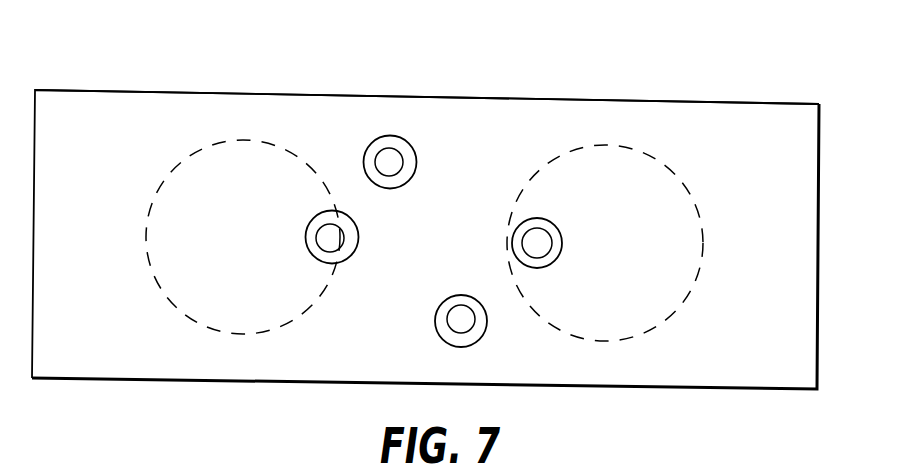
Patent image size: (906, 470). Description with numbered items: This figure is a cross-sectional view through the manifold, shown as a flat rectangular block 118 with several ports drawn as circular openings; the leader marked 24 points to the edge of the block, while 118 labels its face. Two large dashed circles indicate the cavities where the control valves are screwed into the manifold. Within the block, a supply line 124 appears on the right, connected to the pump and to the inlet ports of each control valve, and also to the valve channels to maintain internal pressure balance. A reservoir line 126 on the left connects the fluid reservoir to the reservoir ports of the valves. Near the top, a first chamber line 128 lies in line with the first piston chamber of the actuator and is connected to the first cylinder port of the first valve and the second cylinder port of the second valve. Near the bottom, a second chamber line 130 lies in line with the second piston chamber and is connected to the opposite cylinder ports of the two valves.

The plate 24 is at (681, 100).
The block 118 is at (202, 107).
The supply line 124 is at (542, 243).
The reservoir line 126 is at (327, 243).
The first chamber line 128 is at (395, 165).
The second chamber line 130 is at (460, 320).